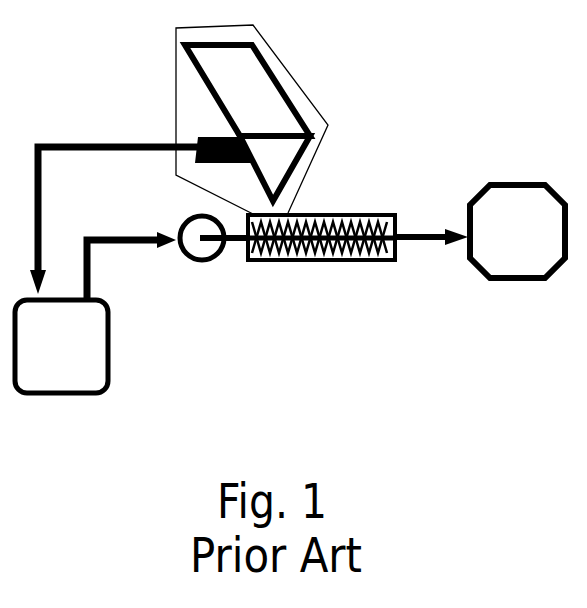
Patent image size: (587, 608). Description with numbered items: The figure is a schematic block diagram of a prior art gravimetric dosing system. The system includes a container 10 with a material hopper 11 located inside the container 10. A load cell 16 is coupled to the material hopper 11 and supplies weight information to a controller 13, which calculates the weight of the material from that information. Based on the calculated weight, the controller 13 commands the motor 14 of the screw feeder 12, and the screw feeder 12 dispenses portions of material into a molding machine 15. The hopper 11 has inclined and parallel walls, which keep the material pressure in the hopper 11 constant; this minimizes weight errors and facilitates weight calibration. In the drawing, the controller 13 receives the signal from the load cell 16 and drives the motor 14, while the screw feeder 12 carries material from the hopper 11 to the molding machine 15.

The container 10 is at (305, 172).
The material hopper 11 is at (255, 82).
The screw feeder 12 is at (335, 262).
The controller 13 is at (50, 378).
The motor 14 is at (200, 262).
The molding machine 15 is at (497, 283).
The load cell 16 is at (195, 128).